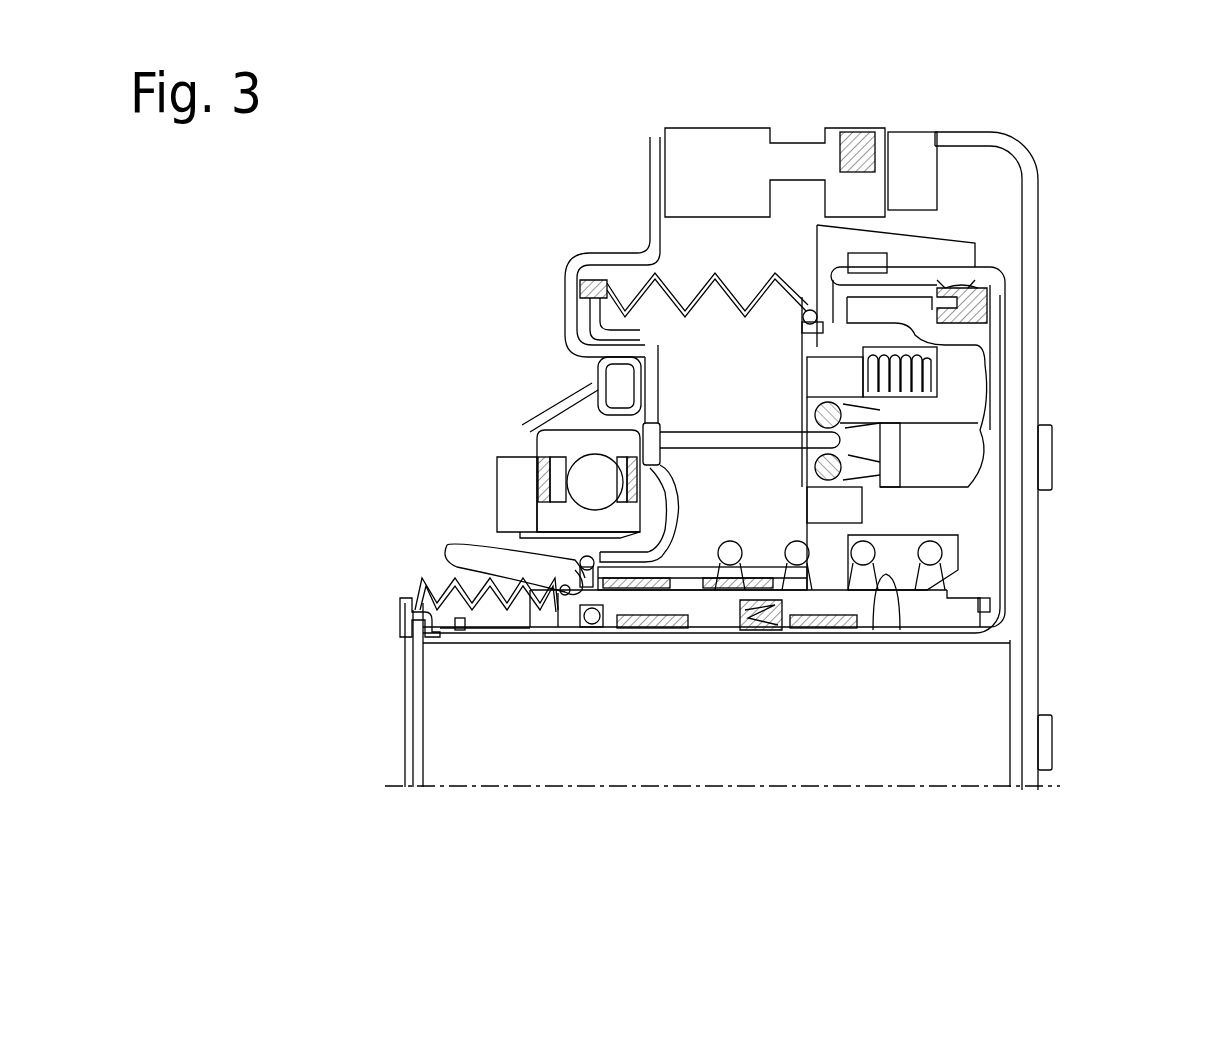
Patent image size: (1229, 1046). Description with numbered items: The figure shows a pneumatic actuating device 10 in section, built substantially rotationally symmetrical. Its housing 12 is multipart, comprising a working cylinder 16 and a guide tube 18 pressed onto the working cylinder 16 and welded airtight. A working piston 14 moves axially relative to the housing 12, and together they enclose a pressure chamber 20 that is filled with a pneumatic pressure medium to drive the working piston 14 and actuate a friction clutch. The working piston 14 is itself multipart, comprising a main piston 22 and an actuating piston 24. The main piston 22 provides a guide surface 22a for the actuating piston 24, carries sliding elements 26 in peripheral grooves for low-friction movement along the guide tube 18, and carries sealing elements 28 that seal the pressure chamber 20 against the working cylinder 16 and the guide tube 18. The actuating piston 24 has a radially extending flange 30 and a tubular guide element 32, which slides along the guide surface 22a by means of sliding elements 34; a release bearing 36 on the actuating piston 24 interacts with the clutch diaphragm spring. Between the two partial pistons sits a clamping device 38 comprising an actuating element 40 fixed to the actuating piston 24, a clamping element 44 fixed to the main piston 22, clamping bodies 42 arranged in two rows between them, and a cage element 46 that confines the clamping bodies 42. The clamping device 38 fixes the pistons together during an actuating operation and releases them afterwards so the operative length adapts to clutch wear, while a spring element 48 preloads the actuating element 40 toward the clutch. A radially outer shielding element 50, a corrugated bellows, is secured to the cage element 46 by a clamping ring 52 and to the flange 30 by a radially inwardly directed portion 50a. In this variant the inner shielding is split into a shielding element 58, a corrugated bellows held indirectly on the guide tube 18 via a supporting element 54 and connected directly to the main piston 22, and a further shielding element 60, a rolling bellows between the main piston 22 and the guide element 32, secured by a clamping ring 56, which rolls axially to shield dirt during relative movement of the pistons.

The pneumatic actuating device 10 is at (1068, 182).
The housing 12 is at (1012, 268).
The working piston 14 is at (770, 366).
The working cylinder 16 is at (1010, 344).
The guide tube 18 is at (952, 636).
The pressure chamber 20 is at (993, 296).
The main piston 22 is at (966, 516).
The guide surface 22a is at (900, 630).
The actuating piston 24 is at (610, 430).
The sliding elements 26 is at (652, 623).
The sealing elements 28 is at (960, 300).
The flange 30 is at (600, 313).
The guide element 32 is at (688, 582).
The sliding elements 34 is at (613, 585).
The release bearing 36 is at (488, 472).
The clamping device 38 is at (746, 258).
The actuating element 40 is at (730, 443).
The clamping bodies 42 is at (822, 417).
The clamping element 44 is at (842, 378).
The cage element 46 is at (898, 242).
The spring element 48 is at (932, 553).
The shielding element 50 is at (700, 292).
The radially inwardly directed portion 50a is at (583, 295).
The clamping ring 52 is at (810, 312).
The supporting element 54 is at (413, 618).
The clamping ring 56 is at (577, 573).
The shielding element 58 is at (417, 587).
The shielding element 60 is at (455, 548).